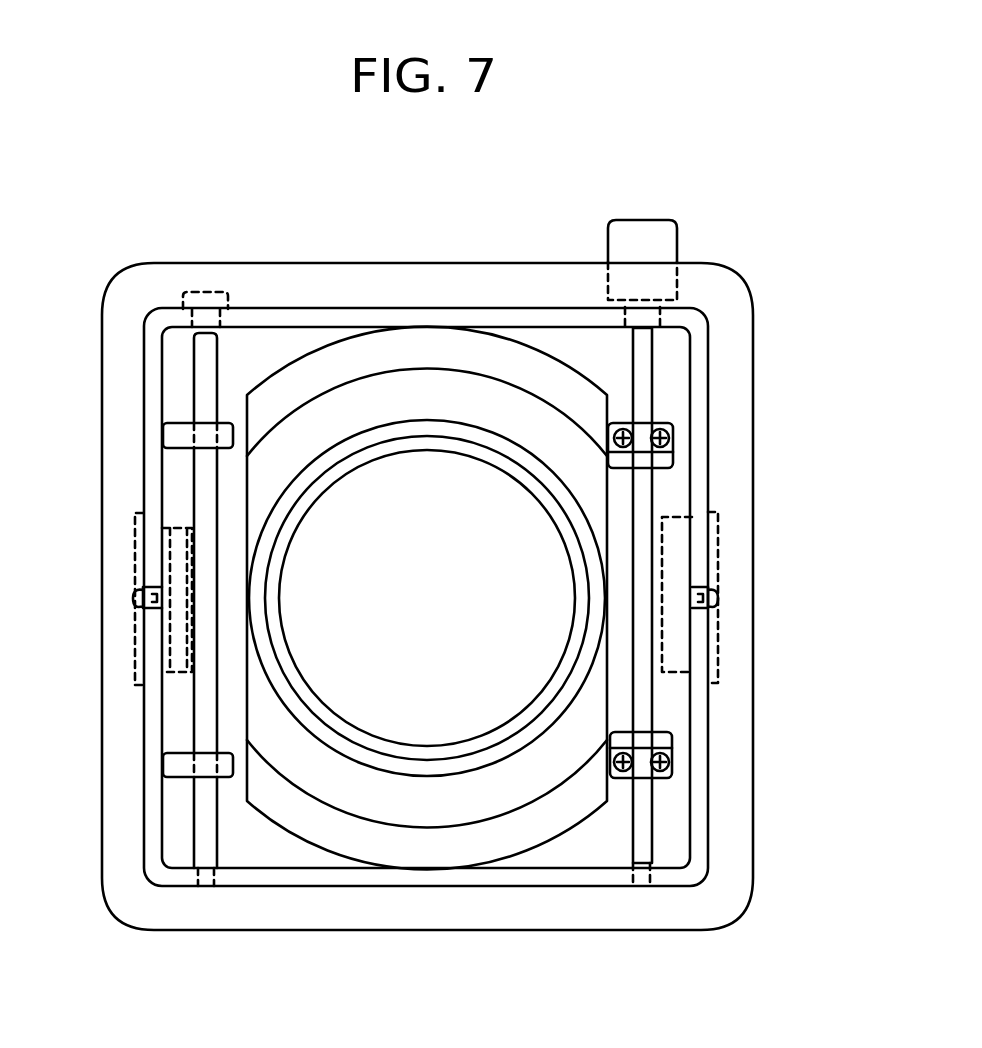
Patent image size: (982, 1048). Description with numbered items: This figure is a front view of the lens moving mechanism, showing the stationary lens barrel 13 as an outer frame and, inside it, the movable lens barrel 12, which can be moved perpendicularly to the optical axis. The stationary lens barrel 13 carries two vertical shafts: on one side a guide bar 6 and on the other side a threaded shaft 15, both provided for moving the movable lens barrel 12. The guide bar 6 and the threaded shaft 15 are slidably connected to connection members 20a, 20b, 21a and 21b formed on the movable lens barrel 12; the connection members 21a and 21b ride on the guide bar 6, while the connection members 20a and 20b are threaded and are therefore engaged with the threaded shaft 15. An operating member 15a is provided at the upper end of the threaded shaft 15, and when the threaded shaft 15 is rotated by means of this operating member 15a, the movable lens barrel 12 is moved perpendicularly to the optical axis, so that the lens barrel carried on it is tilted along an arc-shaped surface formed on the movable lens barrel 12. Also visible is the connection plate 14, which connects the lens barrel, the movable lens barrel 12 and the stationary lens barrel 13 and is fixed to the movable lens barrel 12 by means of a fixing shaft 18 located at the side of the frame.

The guide bar 6 is at (205, 335).
The movable lens barrel 12 is at (168, 363).
The stationary lens barrel 13 is at (145, 395).
The connection plate 14 is at (718, 551).
The threaded shaft 15 is at (645, 365).
The operating member 15a is at (643, 225).
The fixing shaft 18 is at (130, 597).
The connection member 20a is at (668, 458).
The connection member 20b is at (667, 738).
The connection member 21a is at (170, 437).
The connection member 21b is at (162, 768).